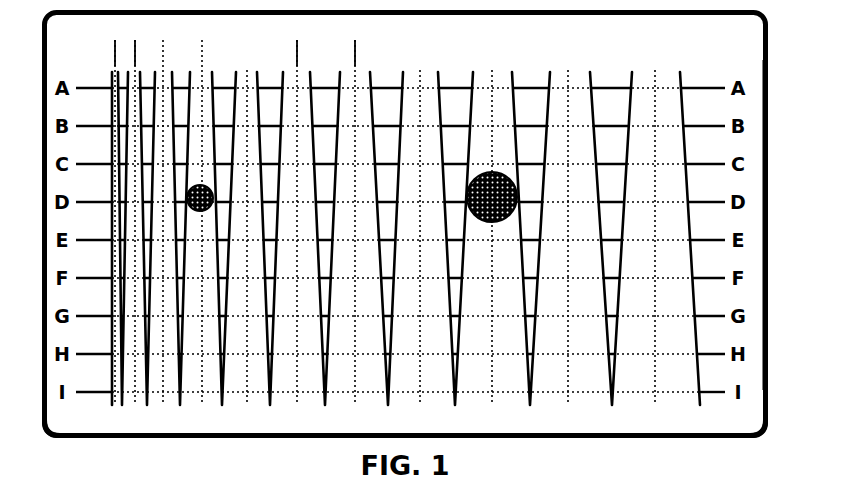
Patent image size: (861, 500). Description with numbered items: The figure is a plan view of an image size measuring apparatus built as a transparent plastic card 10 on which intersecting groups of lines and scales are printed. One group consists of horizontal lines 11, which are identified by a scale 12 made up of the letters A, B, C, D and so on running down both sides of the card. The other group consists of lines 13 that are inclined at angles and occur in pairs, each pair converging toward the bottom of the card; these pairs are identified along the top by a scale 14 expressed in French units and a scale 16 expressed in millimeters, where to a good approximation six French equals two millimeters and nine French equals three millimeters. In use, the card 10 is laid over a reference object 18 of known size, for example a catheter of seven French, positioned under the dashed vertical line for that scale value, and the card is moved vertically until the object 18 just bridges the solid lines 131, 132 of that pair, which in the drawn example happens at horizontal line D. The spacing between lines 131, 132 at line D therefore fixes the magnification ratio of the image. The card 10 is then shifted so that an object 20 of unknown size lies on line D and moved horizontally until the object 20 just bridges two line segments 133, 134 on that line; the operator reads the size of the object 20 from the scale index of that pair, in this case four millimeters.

The transparent plastic card 10 is at (508, 449).
The lines 11 is at (777, 281).
The scale 12 is at (61, 410).
The lines 13 is at (302, 412).
The scale 14 is at (410, 30).
The scale 16 is at (745, 60).
The object 18 is at (191, 208).
The object 20 is at (513, 177).
The line 131 is at (180, 382).
The line 132 is at (222, 382).
The line segment 133 is at (457, 362).
The line segment 134 is at (527, 362).